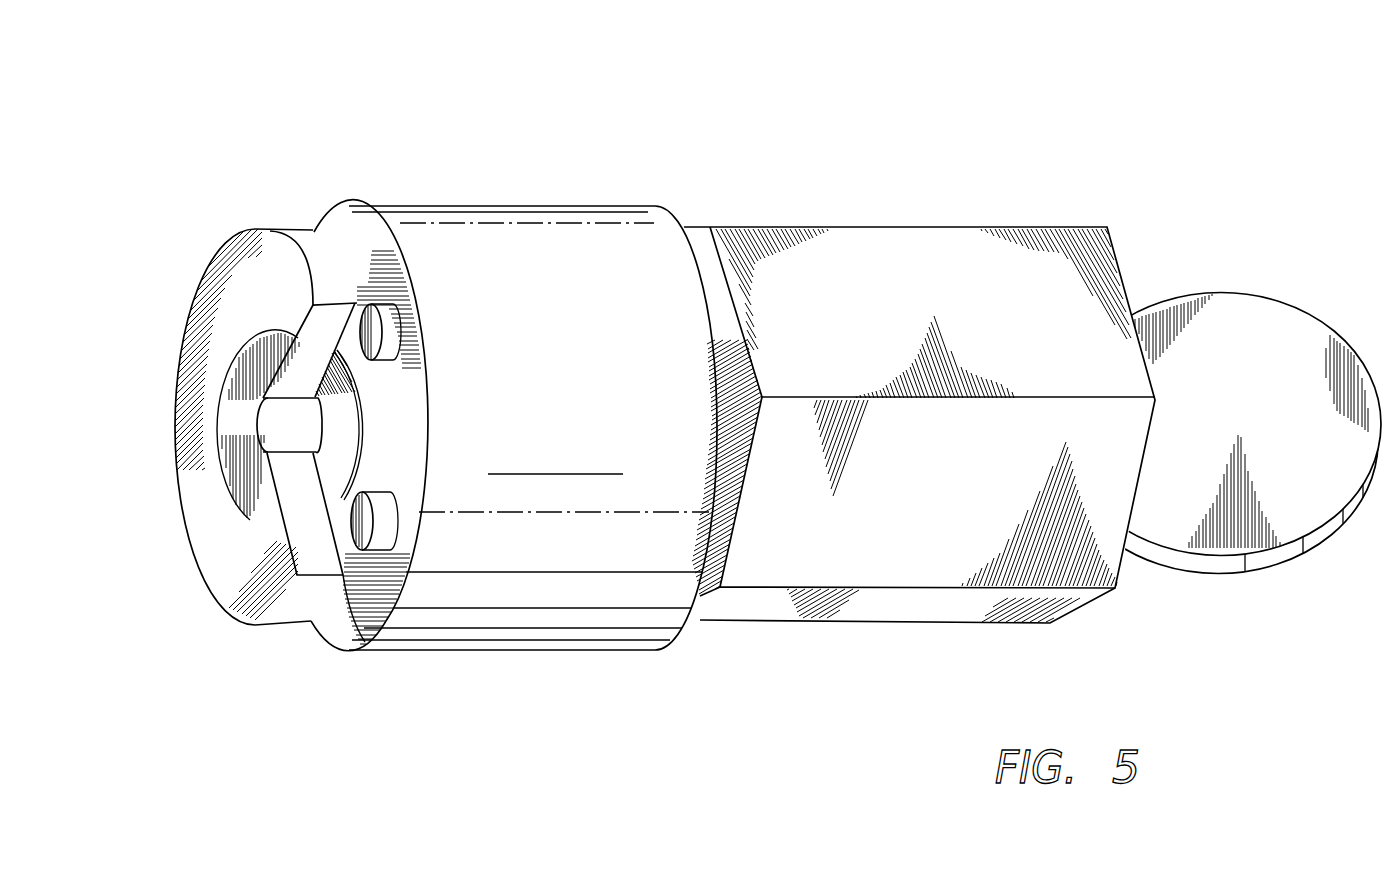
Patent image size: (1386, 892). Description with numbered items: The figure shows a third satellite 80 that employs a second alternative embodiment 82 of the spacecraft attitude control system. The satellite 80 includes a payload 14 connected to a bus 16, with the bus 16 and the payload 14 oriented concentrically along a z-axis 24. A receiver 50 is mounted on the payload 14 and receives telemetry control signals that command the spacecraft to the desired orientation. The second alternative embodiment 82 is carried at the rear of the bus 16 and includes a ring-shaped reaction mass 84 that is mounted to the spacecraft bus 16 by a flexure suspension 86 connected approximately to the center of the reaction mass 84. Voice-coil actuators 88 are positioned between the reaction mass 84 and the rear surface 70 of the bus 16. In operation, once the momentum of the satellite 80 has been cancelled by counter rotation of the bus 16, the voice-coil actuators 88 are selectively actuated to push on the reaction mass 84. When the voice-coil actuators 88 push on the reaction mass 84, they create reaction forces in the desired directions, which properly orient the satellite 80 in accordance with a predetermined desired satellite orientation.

The third satellite 80 is at (776, 98).
The payload 14 is at (910, 227).
The bus 16 is at (497, 206).
The z-axis 24 is at (551, 474).
The receiver 50 is at (1220, 293).
The rear surface 70 is at (347, 217).
The second alternative embodiment 82 is at (358, 673).
The ring-shaped reaction mass 84 is at (192, 549).
The flexure suspension 86 is at (266, 430).
The voice-coil actuators 88 is at (372, 332).